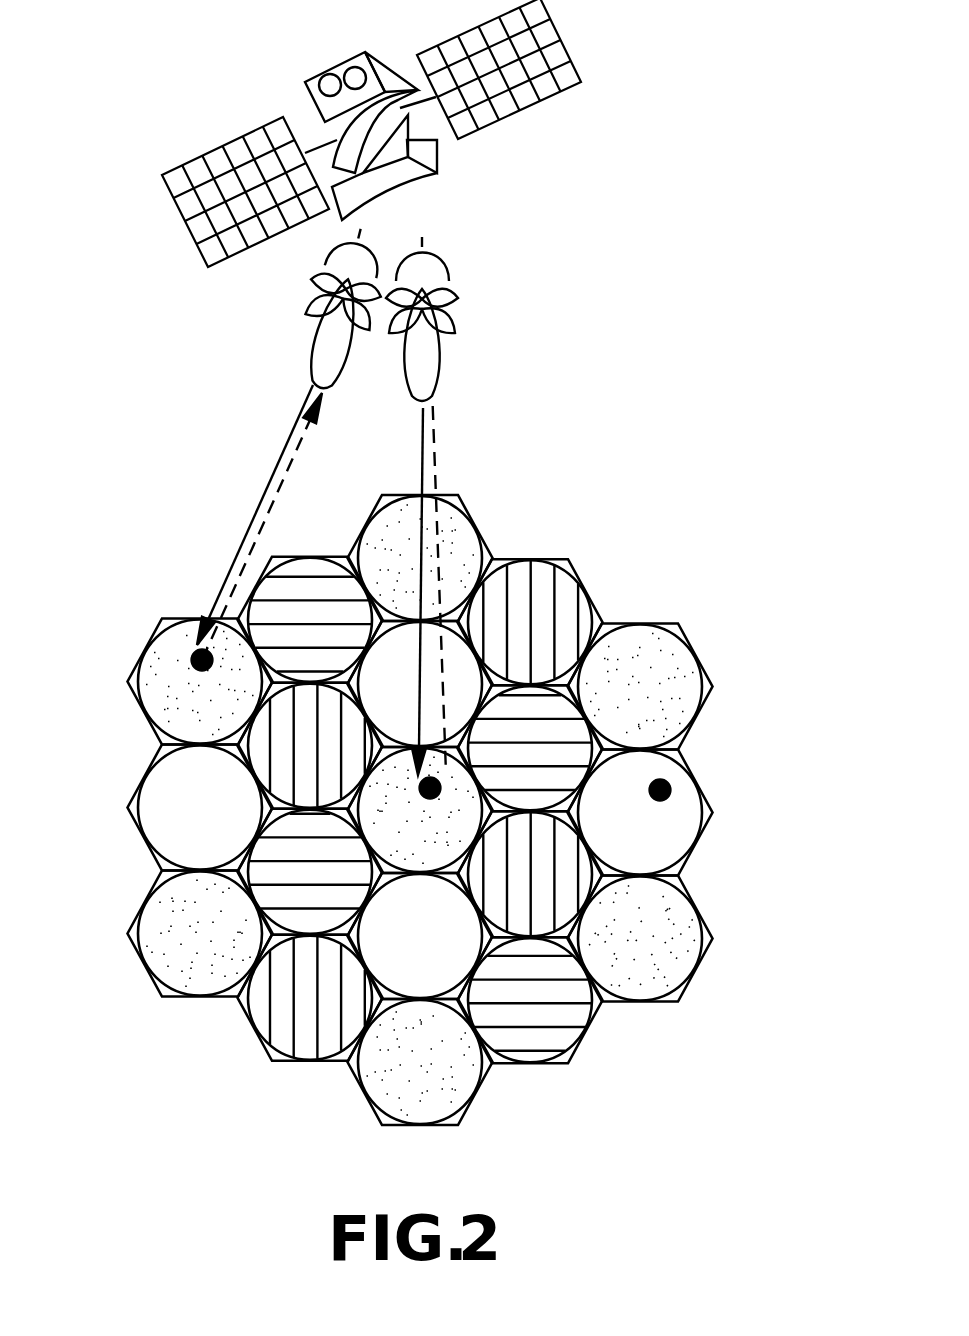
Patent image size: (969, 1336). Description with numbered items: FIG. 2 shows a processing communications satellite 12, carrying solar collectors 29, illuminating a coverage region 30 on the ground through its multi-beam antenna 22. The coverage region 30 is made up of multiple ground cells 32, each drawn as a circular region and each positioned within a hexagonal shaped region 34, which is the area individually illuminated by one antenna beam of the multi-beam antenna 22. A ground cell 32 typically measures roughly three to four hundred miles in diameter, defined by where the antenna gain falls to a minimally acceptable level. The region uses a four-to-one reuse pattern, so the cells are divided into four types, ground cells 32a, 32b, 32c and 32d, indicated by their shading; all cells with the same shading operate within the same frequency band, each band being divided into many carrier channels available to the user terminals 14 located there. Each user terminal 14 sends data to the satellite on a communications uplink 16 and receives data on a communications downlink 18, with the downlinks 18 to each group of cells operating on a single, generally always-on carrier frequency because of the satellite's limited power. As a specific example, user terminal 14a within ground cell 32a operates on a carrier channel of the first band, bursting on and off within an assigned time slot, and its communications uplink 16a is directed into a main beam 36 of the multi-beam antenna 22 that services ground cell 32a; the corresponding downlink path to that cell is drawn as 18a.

The processing communications satellite 12 is at (396, 133).
The solar collectors 29 is at (580, 81).
The multi-beam antenna 22 is at (427, 170).
The main beam 36 is at (320, 345).
The communications uplink 16 is at (437, 440).
The communications uplink 16a is at (297, 463).
The communications downlink 18 is at (422, 467).
The cell center line 18a is at (238, 543).
The coverage region 30 is at (412, 808).
The ground cell 32 is at (675, 840).
The ground cell 32a is at (153, 683).
The ground cell 32b is at (307, 570).
The ground cell 32c is at (530, 580).
The ground cell 32d is at (160, 825).
The hexagonal shaped region 34 is at (707, 830).
The user terminal 14 is at (671, 790).
The user terminal 14a is at (186, 658).